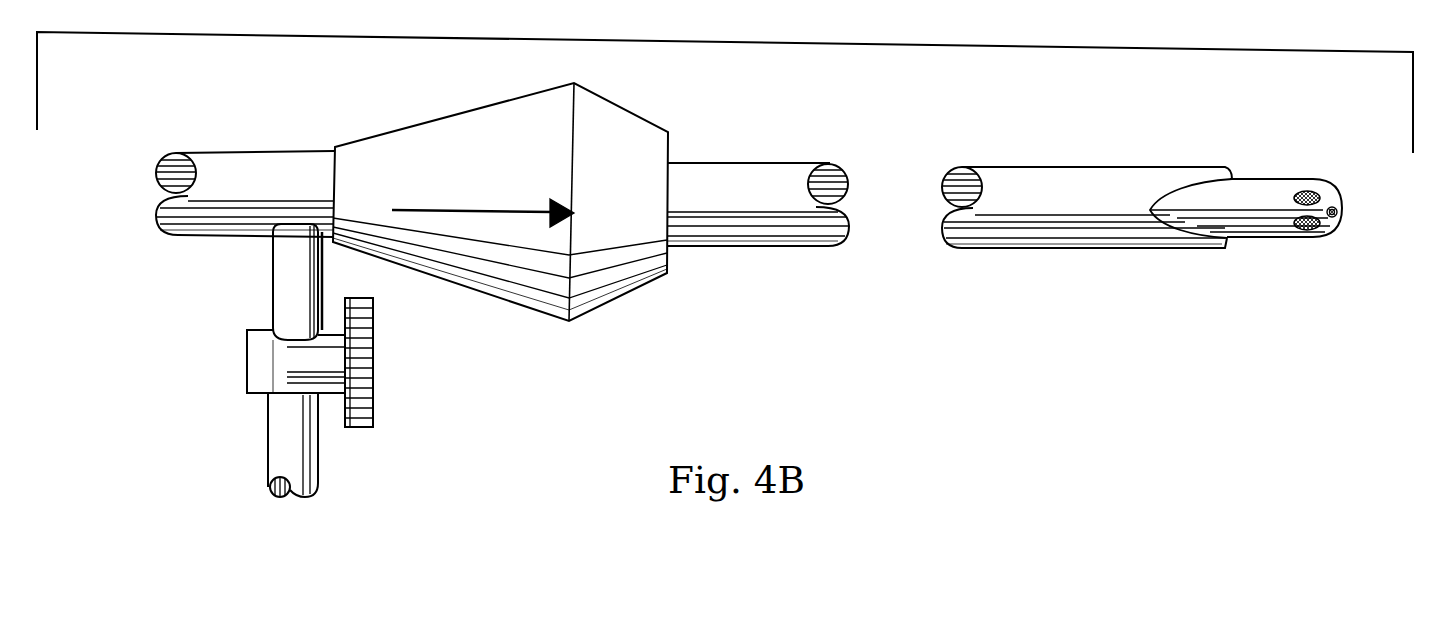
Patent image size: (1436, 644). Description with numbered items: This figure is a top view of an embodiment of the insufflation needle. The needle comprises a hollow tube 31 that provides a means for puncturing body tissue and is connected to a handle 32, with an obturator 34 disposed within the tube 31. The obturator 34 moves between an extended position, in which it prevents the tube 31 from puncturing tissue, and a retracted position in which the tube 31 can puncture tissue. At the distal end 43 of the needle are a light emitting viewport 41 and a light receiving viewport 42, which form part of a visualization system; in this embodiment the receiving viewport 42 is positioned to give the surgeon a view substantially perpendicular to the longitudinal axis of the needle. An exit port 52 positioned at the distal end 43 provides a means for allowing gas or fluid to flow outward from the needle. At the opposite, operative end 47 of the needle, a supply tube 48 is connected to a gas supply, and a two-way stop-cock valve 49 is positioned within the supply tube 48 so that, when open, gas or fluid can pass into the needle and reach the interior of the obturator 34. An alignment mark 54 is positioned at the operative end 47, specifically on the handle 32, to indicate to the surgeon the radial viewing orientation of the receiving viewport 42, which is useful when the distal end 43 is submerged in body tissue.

The hollow tube 31 is at (1058, 205).
The handle 32 is at (482, 145).
The obturator 34 is at (1212, 202).
The light emitting viewport 41 is at (1310, 192).
The light receiving viewport 42 is at (1308, 230).
The distal end 43 is at (1338, 212).
The operative end 47 is at (135, 190).
The supply tube 48 is at (273, 498).
The two-way stop-cock valve 49 is at (272, 360).
The exit port 52 is at (1336, 207).
The alignment mark 54 is at (477, 214).